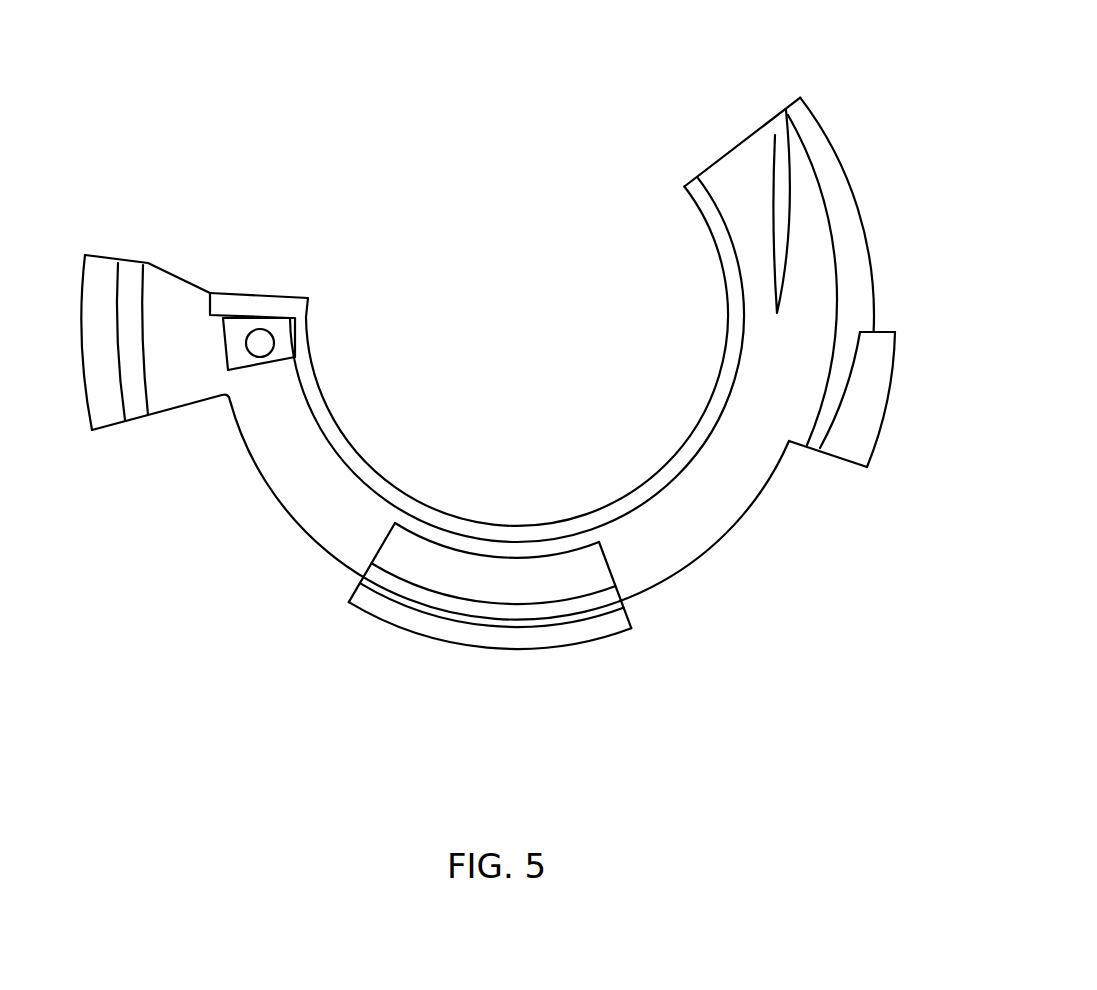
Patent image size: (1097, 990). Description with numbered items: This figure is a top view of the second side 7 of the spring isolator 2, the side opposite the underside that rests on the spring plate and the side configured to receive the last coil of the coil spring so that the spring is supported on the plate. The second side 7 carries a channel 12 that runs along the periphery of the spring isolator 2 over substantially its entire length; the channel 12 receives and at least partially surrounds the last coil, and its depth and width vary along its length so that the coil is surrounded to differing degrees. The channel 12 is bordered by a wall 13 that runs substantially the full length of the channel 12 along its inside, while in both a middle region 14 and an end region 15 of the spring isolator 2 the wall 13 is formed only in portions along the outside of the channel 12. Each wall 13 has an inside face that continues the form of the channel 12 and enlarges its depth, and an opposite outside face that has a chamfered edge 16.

The spring isolator 2 is at (376, 190).
The second side 7 is at (690, 540).
The channel 12 is at (731, 170).
The wall 13 is at (771, 158).
The middle region 14 is at (583, 670).
The end region 15 is at (836, 117).
The chamfered edge 16 is at (751, 128).